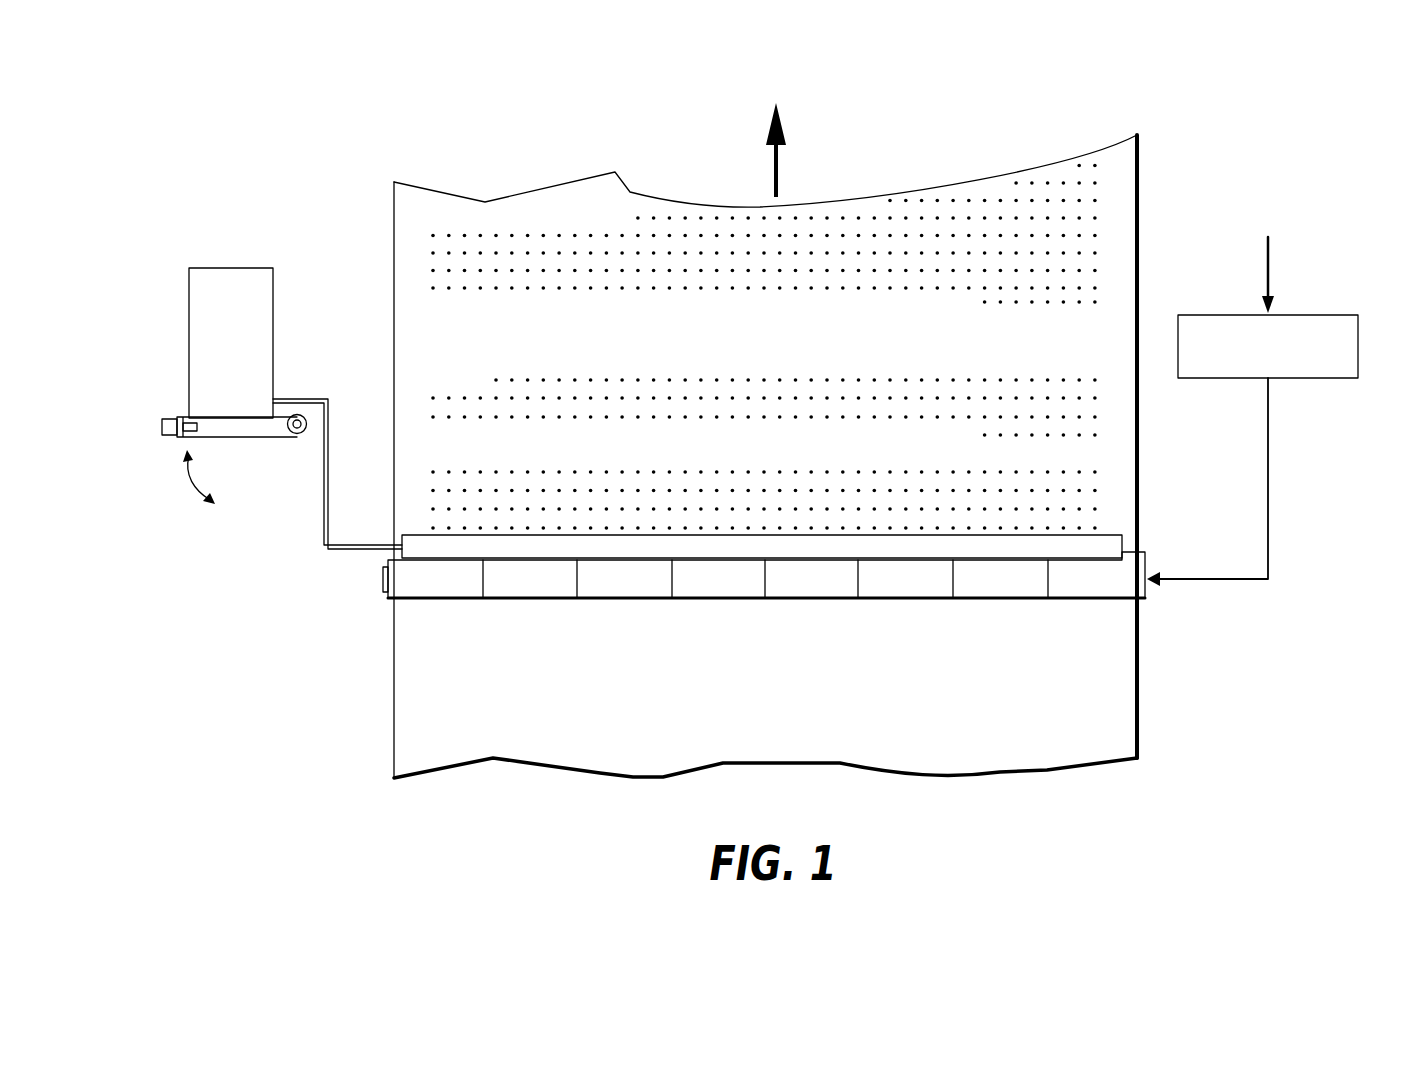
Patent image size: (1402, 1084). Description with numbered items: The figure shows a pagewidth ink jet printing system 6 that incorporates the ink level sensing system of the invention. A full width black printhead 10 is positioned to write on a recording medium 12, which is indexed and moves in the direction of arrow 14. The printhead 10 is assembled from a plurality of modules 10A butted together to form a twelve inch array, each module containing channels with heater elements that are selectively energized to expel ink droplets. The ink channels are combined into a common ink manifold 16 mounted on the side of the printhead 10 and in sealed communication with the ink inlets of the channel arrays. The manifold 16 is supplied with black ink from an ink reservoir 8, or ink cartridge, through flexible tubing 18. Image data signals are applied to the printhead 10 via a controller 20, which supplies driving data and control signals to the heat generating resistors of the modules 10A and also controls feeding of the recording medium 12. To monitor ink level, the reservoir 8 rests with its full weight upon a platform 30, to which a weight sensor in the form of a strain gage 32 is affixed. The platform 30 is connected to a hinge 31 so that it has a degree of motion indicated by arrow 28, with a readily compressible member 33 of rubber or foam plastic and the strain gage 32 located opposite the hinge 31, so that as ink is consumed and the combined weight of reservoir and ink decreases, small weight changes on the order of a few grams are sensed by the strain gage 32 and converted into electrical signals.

The printing system 6 is at (506, 102).
The ink reservoir 8 is at (233, 265).
The full width black printhead 10 is at (795, 563).
The printhead modules 10A is at (877, 588).
The recording medium 12 is at (1140, 156).
The arrow 14 is at (780, 168).
The common ink manifold 16 is at (1106, 543).
The flexible tubing 18 is at (322, 478).
The controller 20 is at (1350, 323).
The arrow 28 is at (190, 478).
The platform 30 is at (186, 415).
The hinge 31 is at (299, 413).
The strain gage 32 is at (160, 426).
The readily compressible member 33 is at (195, 433).